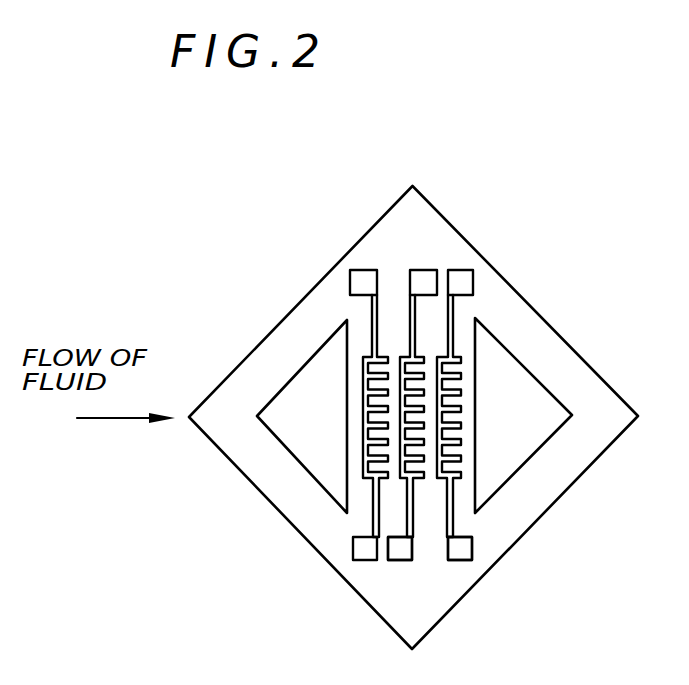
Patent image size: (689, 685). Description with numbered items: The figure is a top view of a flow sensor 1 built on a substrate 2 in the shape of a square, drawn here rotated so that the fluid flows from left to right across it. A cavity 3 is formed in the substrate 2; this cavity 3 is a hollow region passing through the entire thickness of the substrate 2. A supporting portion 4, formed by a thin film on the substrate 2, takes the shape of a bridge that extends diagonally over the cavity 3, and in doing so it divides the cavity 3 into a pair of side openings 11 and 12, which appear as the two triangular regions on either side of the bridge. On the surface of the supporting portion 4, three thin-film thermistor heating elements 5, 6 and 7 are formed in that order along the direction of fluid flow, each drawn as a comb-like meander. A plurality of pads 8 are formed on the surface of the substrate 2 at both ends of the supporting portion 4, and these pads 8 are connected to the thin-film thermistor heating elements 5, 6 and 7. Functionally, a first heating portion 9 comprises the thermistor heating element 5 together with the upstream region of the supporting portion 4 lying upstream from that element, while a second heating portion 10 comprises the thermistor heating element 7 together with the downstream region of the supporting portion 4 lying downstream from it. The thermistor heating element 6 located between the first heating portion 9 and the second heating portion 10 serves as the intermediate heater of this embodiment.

The flow sensor 1 is at (553, 183).
The substrate 2 is at (433, 225).
The cavity 3 is at (543, 415).
The supporting portion 4 is at (347, 472).
The thin-film thermistor heating element 5 is at (362, 388).
The thin-film thermistor heating element 6 is at (423, 401).
The thin-film thermistor heating element 7 is at (460, 452).
The pads 8 is at (405, 561).
The first heating portion 9 is at (340, 243).
The second heating portion 10 is at (485, 245).
The side opening 11 is at (284, 390).
The side opening 12 is at (538, 385).